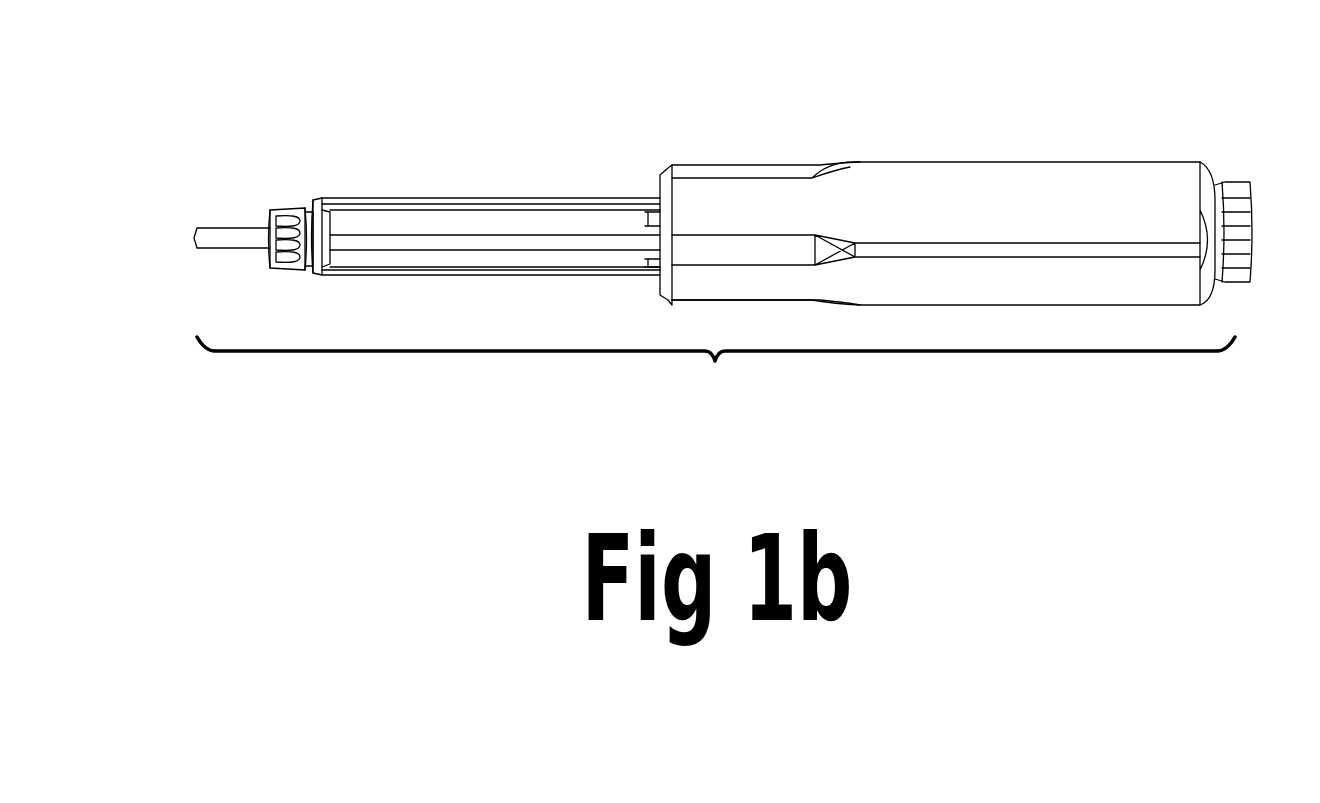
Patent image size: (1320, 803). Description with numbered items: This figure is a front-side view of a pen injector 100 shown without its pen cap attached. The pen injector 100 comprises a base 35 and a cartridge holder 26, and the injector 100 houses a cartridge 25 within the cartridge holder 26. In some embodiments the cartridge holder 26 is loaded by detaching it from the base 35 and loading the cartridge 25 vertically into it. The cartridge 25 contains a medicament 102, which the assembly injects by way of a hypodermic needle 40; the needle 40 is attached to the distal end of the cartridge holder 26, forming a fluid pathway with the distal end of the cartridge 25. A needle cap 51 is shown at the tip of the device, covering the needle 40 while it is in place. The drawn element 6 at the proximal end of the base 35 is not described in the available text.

The pen injector 100 is at (716, 380).
The needle cap 51 is at (190, 225).
The hypodermic needle 40 is at (287, 206).
The cartridge 25 is at (340, 215).
The medicament 102 is at (480, 226).
The cartridge holder 26 is at (609, 195).
The base 35 is at (787, 177).
The dose knob 6 is at (1247, 181).